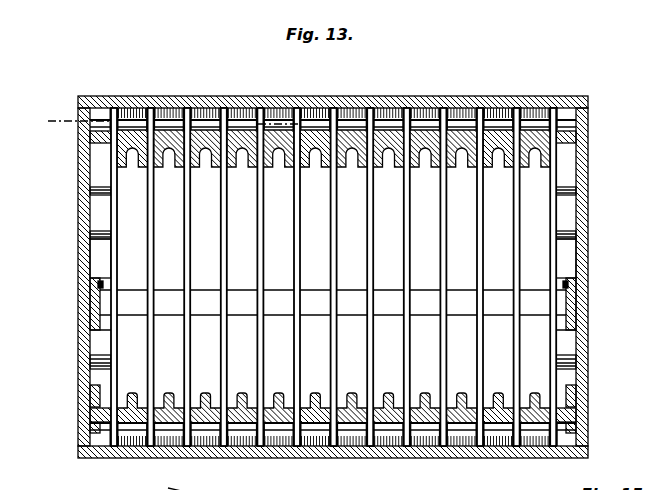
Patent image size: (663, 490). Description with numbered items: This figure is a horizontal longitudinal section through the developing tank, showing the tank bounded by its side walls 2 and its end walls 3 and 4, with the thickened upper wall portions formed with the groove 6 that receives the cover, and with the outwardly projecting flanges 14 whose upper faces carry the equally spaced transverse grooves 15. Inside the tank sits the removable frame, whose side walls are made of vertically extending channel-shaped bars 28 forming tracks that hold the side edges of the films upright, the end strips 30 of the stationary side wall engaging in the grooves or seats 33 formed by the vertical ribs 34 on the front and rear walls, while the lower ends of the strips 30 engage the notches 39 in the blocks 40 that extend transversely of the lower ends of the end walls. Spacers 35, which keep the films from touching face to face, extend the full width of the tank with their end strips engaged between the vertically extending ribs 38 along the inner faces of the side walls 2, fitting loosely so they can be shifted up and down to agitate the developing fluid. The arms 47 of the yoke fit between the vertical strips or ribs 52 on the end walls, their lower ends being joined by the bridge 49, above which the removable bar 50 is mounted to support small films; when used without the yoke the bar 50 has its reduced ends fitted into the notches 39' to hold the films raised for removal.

The side walls 2 is at (340, 100).
The end wall 3 is at (78, 177).
The end wall 4 is at (588, 178).
The groove 6 is at (321, 468).
The flanges 14 is at (46, 110).
The grooves 15 is at (165, 483).
The bars 28 is at (195, 138).
The depending strips 30 is at (100, 143).
The grooves or seats 33 is at (92, 414).
The ribs 34 is at (92, 388).
The spacers 35 is at (253, 180).
The ribs 38 is at (418, 110).
The notches 39 is at (333, 213).
The notches 39' is at (328, 342).
The blocks 40 is at (95, 250).
The arms 47 is at (566, 300).
The bridge 49 is at (80, 310).
The bar 50 is at (494, 298).
The strips or ribs 52 is at (88, 290).